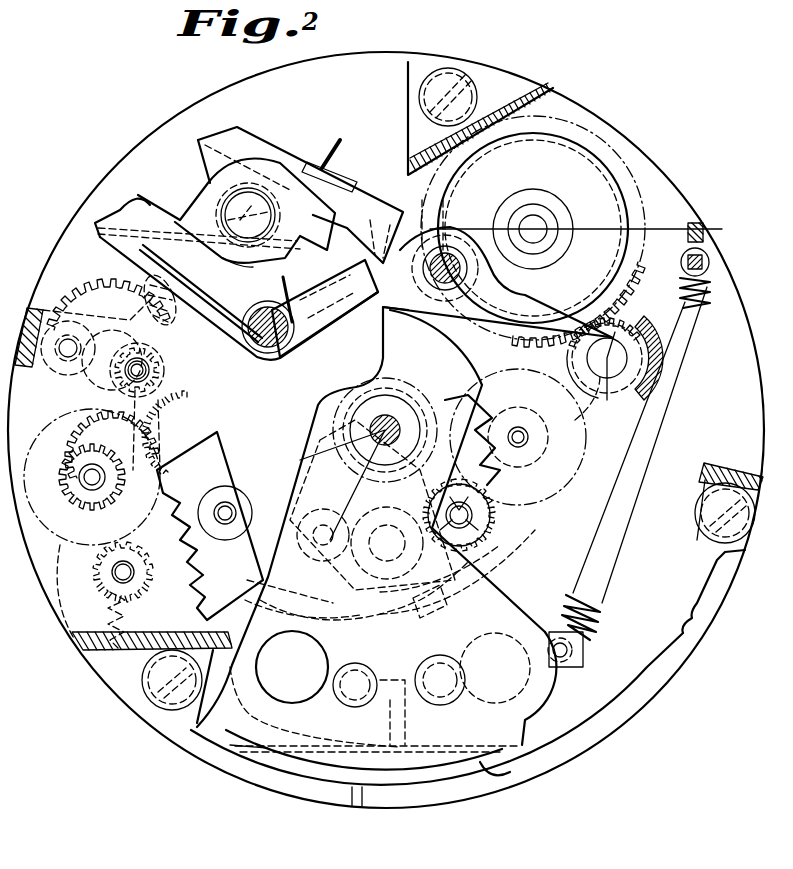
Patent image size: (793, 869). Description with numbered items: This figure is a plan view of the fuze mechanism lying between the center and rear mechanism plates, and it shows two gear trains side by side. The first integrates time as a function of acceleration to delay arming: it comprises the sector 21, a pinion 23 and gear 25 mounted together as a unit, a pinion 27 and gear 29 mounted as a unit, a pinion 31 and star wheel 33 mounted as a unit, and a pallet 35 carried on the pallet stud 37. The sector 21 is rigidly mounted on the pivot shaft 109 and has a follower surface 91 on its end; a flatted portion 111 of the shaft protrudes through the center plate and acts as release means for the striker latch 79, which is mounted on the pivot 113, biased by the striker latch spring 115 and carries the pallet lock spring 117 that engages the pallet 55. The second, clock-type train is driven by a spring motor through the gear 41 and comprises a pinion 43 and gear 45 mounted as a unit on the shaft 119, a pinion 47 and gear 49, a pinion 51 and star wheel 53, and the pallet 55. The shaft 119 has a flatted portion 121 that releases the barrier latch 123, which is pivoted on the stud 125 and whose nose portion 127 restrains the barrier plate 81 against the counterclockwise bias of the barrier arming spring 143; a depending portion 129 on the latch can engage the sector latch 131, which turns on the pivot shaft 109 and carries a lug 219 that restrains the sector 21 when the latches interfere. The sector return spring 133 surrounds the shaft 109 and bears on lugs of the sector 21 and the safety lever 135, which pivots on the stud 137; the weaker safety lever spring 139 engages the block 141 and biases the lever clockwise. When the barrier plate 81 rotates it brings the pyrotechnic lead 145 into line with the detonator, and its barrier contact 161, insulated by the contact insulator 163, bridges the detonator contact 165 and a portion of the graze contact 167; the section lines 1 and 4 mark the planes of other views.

The section line 1- 1 is at (90, 588).
The section line 4- 4 is at (392, 220).
The sector 21 is at (83, 300).
The pinion 23 is at (110, 384).
The gear 25 is at (60, 290).
The pinion 27 is at (70, 440).
The gear 29 is at (42, 568).
The pinion 31 is at (96, 592).
The star wheel 33 is at (214, 575).
The pallet 35 is at (205, 432).
The pallet stud 37 is at (225, 495).
The gear 41 is at (625, 312).
The pinion 43 is at (625, 335).
The gear 45 is at (660, 442).
The pinion 47 is at (535, 450).
The gear 49 is at (560, 485).
The pinion 51 is at (492, 520).
The star wheel 53 is at (488, 490).
The pallet 55 is at (472, 420).
The striker latch 79 is at (290, 420).
The barrier plate 81 is at (505, 600).
The follower surface 91 is at (377, 224).
The pivot shaft 109 is at (256, 205).
The flatted portion 111 is at (192, 198).
The pivot 113 is at (375, 603).
The striker latch spring 115 is at (140, 322).
The pallet lock spring 117 is at (262, 545).
The shaft 119 is at (590, 372).
The flatted portion 121 is at (585, 402).
The barrier latch 123 is at (545, 302).
The stud 125 is at (450, 250).
The nose portion 127 is at (300, 340).
The depending portion 129 is at (322, 291).
The sector latch 131 is at (255, 135).
The sector return spring 133 is at (330, 140).
The safety lever 135 is at (160, 250).
The stud 137 is at (264, 355).
The safety lever spring 139 is at (245, 345).
The block 141 is at (170, 325).
The barrier arming spring 143 is at (598, 625).
The pyrotechnic lead 145 is at (315, 654).
The barrier contact 161 is at (495, 772).
The contact insulator 163 is at (478, 708).
The detonator contact 165 is at (575, 740).
The graze contact 167 is at (720, 585).
The lug 219 is at (232, 262).